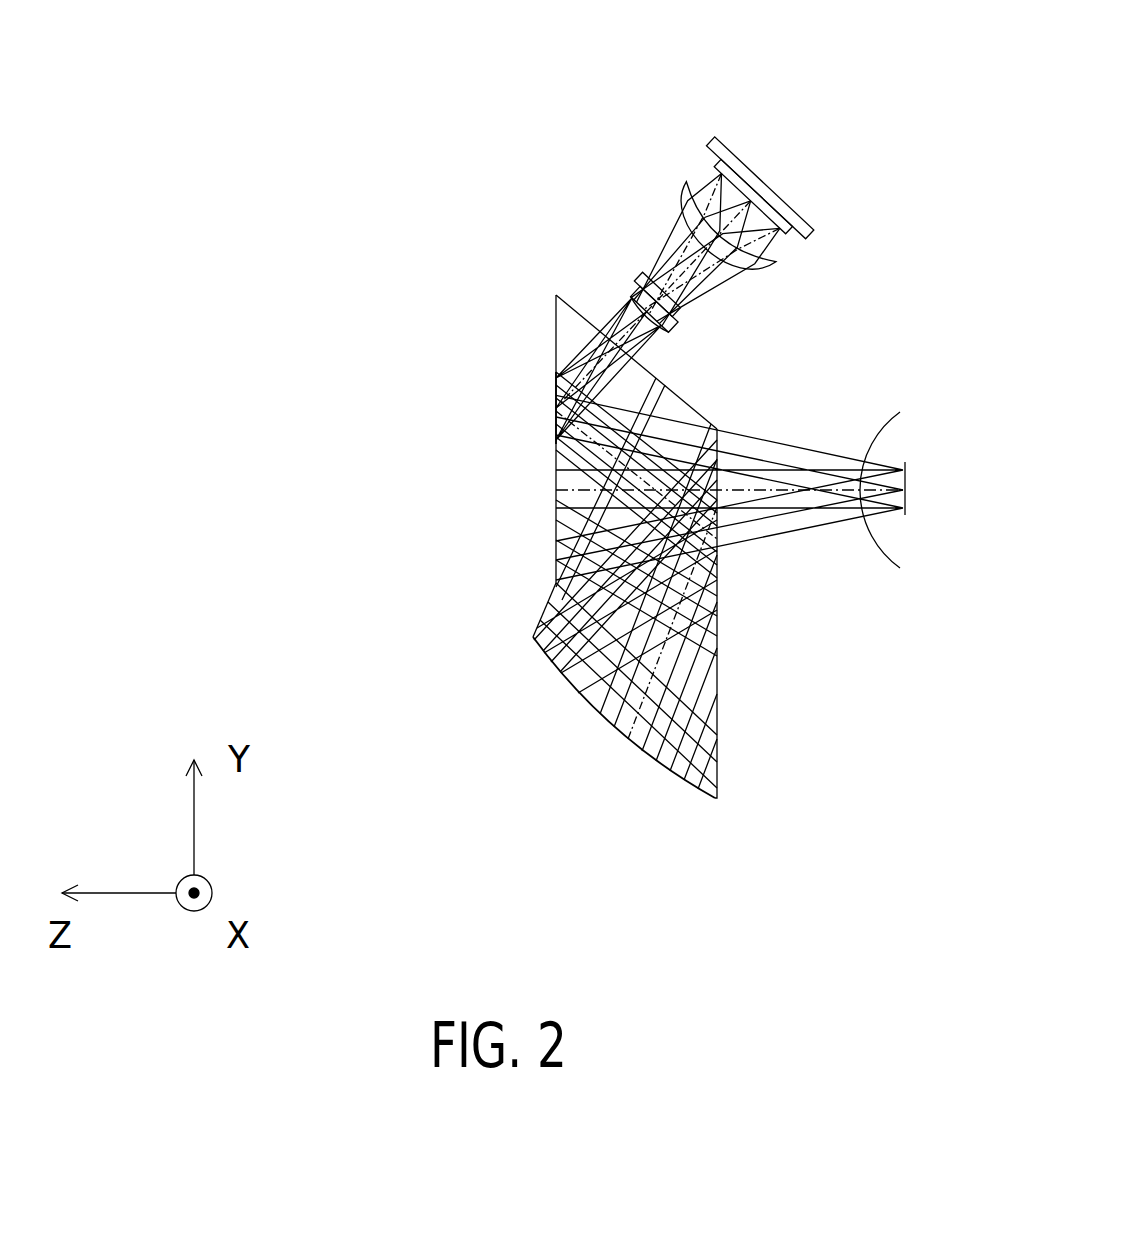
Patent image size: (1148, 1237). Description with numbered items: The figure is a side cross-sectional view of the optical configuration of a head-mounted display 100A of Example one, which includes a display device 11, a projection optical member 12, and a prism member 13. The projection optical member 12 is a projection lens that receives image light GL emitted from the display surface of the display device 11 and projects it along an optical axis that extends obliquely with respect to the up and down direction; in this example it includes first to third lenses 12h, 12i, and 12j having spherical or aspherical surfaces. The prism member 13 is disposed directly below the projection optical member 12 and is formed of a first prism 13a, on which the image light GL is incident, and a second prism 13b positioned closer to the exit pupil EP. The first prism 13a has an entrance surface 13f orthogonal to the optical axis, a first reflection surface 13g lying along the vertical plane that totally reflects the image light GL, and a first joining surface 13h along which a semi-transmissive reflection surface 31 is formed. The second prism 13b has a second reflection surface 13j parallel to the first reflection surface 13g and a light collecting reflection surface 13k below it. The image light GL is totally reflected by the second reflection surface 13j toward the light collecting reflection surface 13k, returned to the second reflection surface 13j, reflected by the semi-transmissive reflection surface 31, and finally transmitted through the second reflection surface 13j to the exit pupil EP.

The head-mounted display 100A is at (448, 120).
The display device 11 is at (768, 200).
The projection optical member 12 is at (691, 170).
The first lens 12h is at (770, 262).
The second lens 12i is at (692, 318).
The third lens 12j is at (672, 338).
The prism member 13 is at (488, 368).
The first prism 13a is at (570, 345).
The second prism 13b is at (593, 680).
The entrance surface 13f is at (605, 325).
The first reflection surface 13g is at (556, 497).
The first joining surface 13h is at (452, 414).
The second reflection surface 13j is at (717, 655).
The light collecting reflection surface 13k is at (568, 680).
The semi-transmissive reflection surface 31 is at (557, 418).
The image light GL is at (658, 352).
The exit pupil EP is at (905, 517).